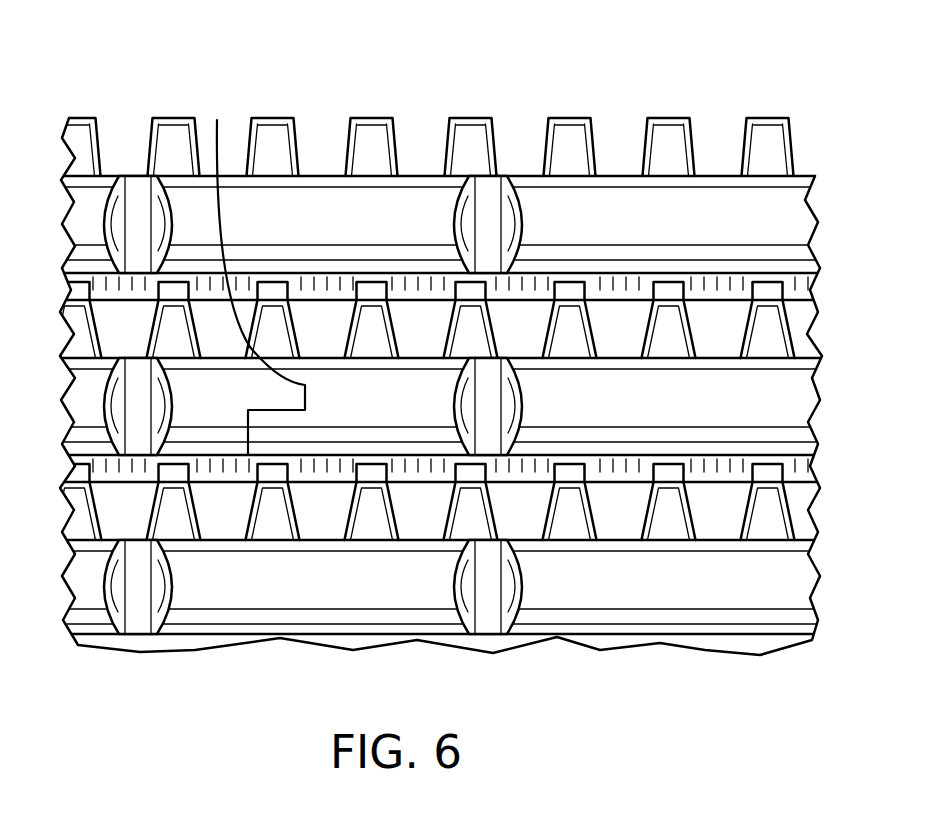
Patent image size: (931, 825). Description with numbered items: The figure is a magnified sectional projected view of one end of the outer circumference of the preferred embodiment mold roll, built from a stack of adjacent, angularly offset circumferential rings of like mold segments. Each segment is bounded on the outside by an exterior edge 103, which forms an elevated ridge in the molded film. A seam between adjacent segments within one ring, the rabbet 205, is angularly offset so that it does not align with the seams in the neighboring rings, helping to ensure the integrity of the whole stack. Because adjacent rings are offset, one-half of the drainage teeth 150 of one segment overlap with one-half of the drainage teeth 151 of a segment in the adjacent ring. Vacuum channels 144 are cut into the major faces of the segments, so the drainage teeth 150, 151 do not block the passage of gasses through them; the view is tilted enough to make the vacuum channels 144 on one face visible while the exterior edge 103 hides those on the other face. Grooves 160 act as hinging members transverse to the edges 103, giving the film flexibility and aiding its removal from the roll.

The exterior edge 103 is at (400, 237).
The vacuum channels 144 is at (570, 290).
The drainage teeth 150 is at (558, 128).
The drainage teeth 151 is at (705, 315).
The grooves 160 is at (483, 203).
The rabbet 205 is at (217, 120).